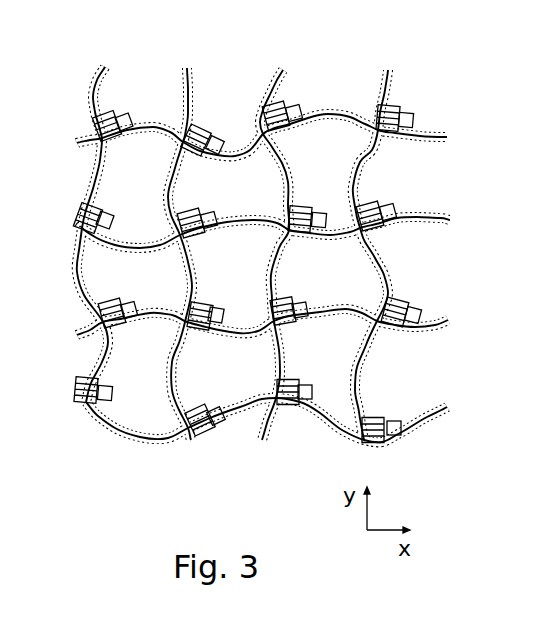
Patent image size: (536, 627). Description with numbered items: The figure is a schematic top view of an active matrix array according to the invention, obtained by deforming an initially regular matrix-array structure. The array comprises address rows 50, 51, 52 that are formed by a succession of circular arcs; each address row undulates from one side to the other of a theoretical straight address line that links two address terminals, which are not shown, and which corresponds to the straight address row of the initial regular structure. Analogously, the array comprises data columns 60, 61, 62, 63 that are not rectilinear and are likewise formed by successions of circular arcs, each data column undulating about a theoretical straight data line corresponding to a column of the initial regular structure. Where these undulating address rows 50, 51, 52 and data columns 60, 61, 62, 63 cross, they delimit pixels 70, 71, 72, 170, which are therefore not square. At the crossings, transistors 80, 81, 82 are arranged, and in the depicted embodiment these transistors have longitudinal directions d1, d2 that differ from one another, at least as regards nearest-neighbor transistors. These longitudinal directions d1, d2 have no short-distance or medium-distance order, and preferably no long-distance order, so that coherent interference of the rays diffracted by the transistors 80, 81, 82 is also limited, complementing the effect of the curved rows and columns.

The data column 60 is at (105, 67).
The data column 61 is at (187, 68).
The data column 62 is at (285, 70).
The fourth conductive line 63 is at (388, 70).
The address row 50 is at (96, 238).
The address row 51 is at (80, 333).
The address row 52 is at (120, 423).
The transistor 80 is at (78, 217).
The transistor 81 is at (100, 314).
The transistor 82 is at (77, 392).
The pixel 70 is at (148, 193).
The pixel 71 is at (146, 286).
The pixel 72 is at (148, 380).
The pixel 170 is at (275, 200).
The longitudinal direction d1 is at (233, 148).
The longitudinal direction d2 is at (227, 222).